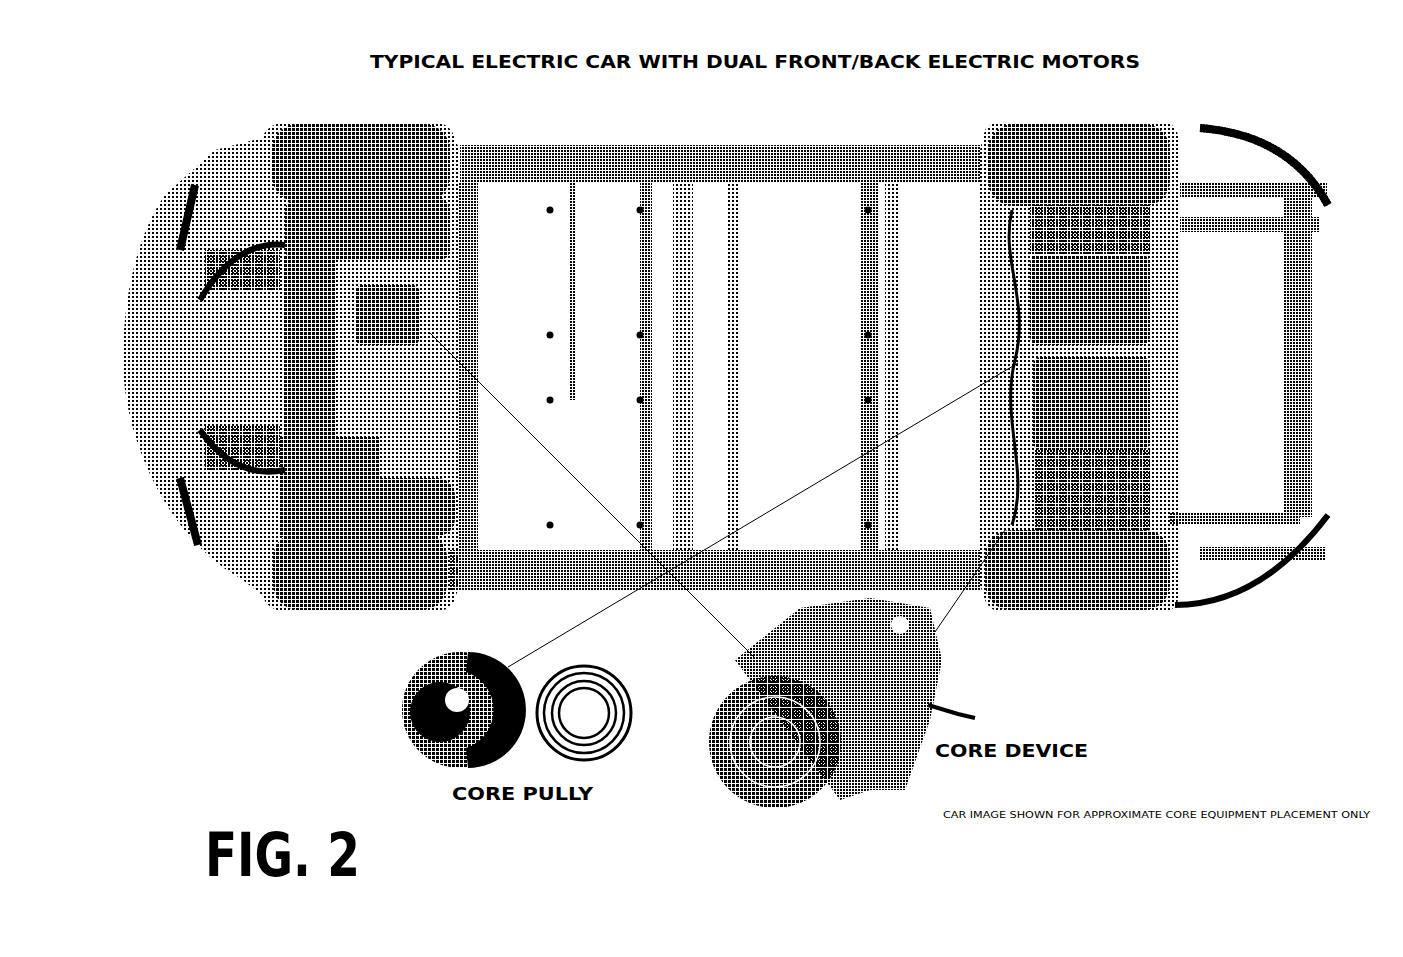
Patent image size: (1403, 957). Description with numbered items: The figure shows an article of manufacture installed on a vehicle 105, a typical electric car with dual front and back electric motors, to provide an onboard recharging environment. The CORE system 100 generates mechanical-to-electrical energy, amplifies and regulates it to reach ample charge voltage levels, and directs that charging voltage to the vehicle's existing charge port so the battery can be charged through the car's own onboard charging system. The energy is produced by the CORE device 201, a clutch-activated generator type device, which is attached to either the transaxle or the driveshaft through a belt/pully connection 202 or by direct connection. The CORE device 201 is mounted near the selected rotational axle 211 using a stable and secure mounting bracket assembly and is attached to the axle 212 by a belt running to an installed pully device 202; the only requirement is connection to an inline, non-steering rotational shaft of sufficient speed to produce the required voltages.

The CORE system 100 is at (285, 103).
The vehicle 105 is at (1212, 137).
The clutch-activated generator type device 201 is at (1150, 372).
The belt/pully connection 202 is at (405, 345).
The selected rotational axle 211 is at (1100, 305).
The axle 212 is at (355, 280).